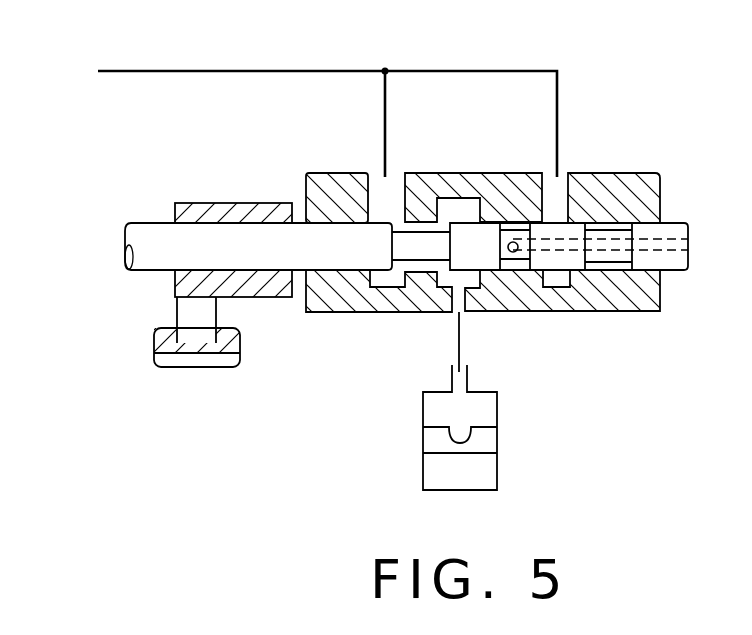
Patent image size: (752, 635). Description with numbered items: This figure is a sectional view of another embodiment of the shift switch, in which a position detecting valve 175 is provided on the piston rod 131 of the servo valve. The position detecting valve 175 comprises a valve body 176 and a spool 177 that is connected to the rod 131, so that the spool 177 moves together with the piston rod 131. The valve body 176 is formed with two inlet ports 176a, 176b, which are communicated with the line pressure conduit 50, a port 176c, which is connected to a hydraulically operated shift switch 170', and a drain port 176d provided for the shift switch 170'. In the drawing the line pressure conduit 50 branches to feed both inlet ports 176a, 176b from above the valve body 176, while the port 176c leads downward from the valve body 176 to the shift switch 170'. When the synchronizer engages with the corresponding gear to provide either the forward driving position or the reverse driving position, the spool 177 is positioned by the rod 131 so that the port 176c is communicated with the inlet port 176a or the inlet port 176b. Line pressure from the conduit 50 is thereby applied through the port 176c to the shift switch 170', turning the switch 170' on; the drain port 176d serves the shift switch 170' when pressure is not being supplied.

The line pressure conduit 50 is at (279, 70).
The piston rod 131 is at (150, 237).
The hydraulically operated shift switch 170' is at (504, 427).
The position detecting valve 175 is at (524, 247).
The valve body 176 is at (487, 247).
The inlet port 176a is at (377, 176).
The inlet port 176b is at (560, 184).
The port 176c is at (455, 312).
The drain port 176d is at (517, 254).
The spool 177 is at (596, 291).